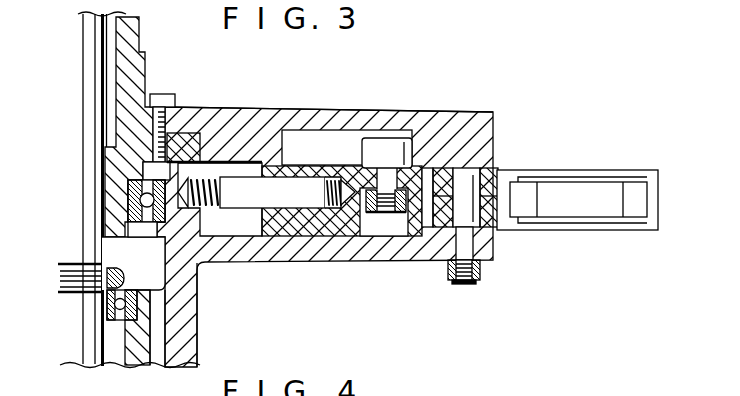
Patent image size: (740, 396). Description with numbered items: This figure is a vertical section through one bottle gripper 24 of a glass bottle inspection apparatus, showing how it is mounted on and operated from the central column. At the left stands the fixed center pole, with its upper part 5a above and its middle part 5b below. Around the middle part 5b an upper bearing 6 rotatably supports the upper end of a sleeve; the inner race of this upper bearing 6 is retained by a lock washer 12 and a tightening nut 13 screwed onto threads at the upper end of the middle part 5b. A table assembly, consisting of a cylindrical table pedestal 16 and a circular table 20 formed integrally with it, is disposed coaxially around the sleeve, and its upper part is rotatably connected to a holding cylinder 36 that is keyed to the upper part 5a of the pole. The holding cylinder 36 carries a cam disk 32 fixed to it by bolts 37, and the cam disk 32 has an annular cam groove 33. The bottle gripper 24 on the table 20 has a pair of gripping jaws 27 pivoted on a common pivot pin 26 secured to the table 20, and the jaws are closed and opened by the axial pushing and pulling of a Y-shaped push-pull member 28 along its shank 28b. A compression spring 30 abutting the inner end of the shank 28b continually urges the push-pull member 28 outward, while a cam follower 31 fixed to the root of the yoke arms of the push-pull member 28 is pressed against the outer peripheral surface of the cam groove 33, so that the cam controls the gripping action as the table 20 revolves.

The upper part of center pole 5a is at (82, 72).
The middle part of center pole 5b is at (82, 333).
The upper bearing 6 is at (113, 320).
The lock washer 12 is at (125, 291).
The tightening nut 13 is at (115, 268).
The table pedestal 16 is at (198, 323).
The circular table 20 is at (325, 253).
The bottle gripper 24 is at (380, 226).
The pivot pin 26 is at (464, 221).
The gripping jaw 27 is at (594, 175).
The push-pull member 28 is at (353, 233).
The shank of push-pull member 28b is at (285, 233).
The compression spring 30 is at (222, 193).
The cam follower 31 is at (362, 152).
The cam disk 32 is at (408, 113).
The annular cam groove 33 is at (299, 144).
The holding cylinder 36 is at (143, 65).
The bolt 37 is at (171, 96).